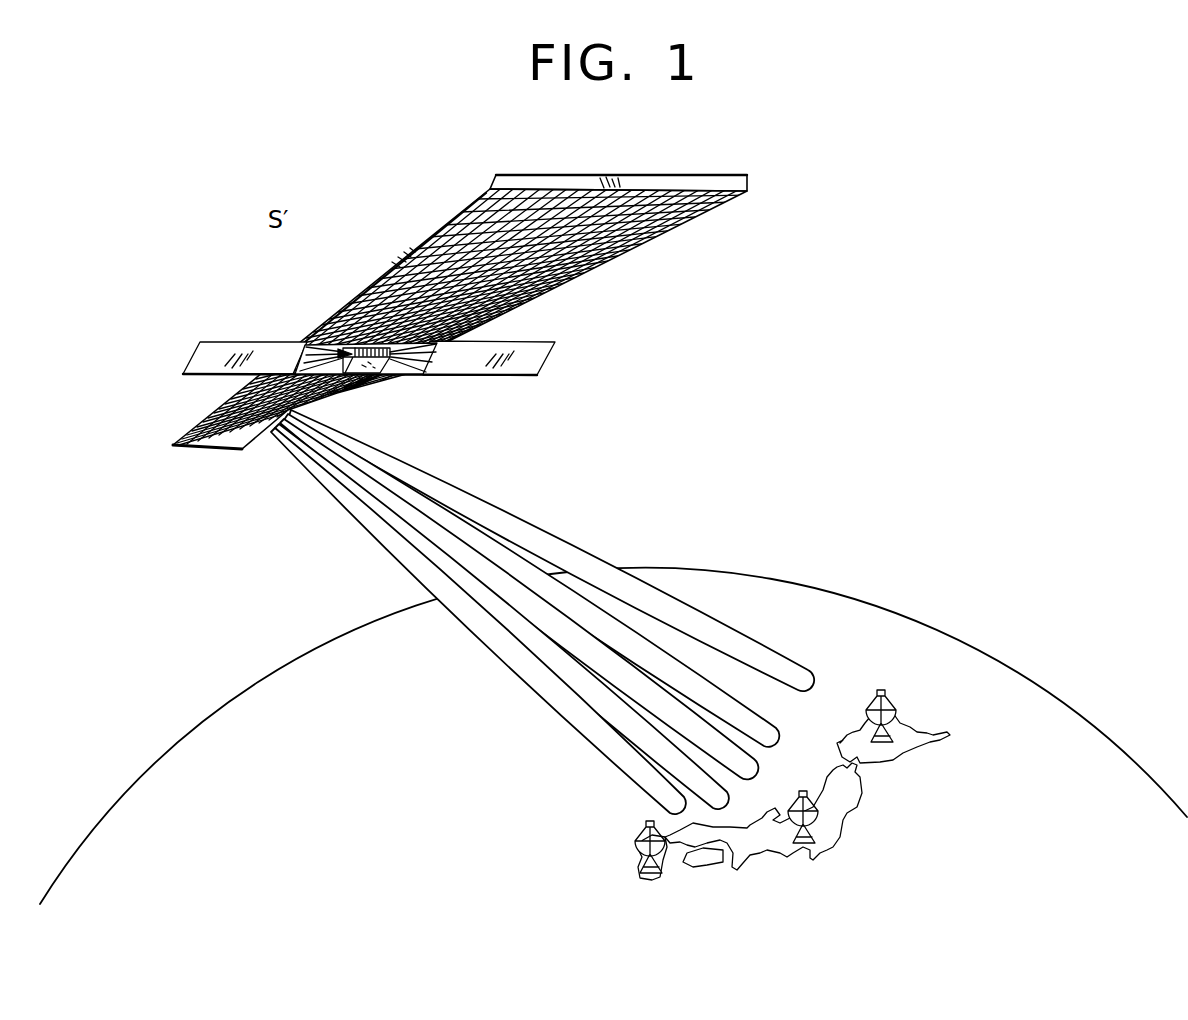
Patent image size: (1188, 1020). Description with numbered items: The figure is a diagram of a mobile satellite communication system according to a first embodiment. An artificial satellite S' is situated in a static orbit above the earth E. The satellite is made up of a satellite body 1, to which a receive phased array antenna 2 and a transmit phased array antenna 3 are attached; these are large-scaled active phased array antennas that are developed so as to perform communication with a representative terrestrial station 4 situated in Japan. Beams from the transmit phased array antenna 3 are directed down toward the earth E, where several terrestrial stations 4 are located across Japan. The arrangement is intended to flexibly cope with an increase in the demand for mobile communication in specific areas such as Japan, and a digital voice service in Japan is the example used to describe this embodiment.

The satellite body 1 is at (366, 346).
The receive phased array antenna 2 is at (604, 263).
The transmit phased array antenna 3 is at (233, 453).
The terrestrial station 4 is at (893, 700).
The earth E is at (960, 640).